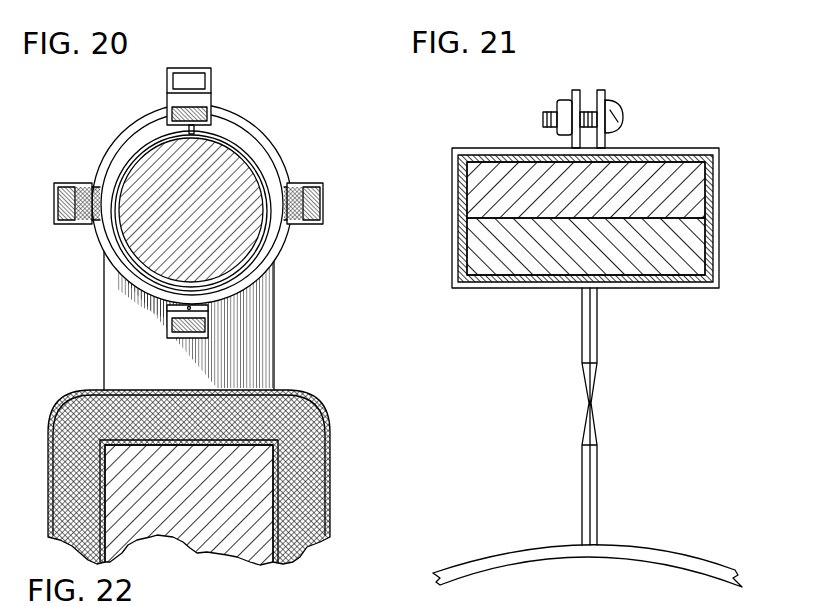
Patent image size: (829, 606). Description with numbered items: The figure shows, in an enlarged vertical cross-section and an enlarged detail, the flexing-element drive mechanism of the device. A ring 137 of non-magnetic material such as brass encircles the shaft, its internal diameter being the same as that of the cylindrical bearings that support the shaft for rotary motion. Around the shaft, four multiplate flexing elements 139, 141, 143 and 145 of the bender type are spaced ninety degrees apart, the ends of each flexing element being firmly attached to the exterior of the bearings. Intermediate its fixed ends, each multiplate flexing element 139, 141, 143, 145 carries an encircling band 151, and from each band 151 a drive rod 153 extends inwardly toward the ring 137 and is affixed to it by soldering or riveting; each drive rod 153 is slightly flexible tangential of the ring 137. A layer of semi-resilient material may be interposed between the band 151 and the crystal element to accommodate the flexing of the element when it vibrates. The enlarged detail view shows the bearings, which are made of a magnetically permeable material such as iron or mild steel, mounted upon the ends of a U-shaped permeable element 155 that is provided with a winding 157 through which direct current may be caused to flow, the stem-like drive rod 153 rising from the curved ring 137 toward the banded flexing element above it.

In FIG. 21, the ring 137 is at (642, 557).
In FIG. 20, the multiplate flexing element 139 is at (213, 111).
In FIG. 20, the multiplate flexing element 141 is at (322, 222).
In FIG. 20, the multiplate flexing element 143 is at (200, 333).
In FIG. 20, the multiplate flexing element 145 is at (66, 205).
In FIG. 20, the encircling band 151 is at (216, 119).
In FIG. 21, the encircling band 151 is at (720, 255).
In FIG. 21, the drive rod 153 is at (597, 350).
In FIG. 20, the U-shaped permeable element 155 is at (200, 553).
In FIG. 21, the U-shaped permeable element 155 is at (500, 270).
In FIG. 20, the winding 157 is at (302, 548).